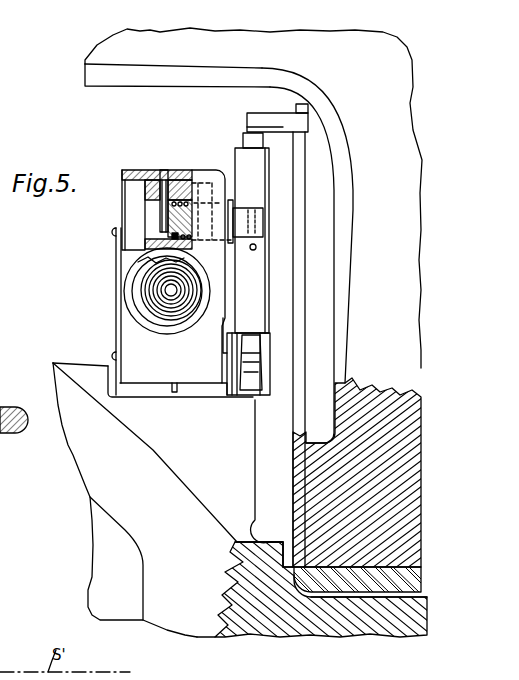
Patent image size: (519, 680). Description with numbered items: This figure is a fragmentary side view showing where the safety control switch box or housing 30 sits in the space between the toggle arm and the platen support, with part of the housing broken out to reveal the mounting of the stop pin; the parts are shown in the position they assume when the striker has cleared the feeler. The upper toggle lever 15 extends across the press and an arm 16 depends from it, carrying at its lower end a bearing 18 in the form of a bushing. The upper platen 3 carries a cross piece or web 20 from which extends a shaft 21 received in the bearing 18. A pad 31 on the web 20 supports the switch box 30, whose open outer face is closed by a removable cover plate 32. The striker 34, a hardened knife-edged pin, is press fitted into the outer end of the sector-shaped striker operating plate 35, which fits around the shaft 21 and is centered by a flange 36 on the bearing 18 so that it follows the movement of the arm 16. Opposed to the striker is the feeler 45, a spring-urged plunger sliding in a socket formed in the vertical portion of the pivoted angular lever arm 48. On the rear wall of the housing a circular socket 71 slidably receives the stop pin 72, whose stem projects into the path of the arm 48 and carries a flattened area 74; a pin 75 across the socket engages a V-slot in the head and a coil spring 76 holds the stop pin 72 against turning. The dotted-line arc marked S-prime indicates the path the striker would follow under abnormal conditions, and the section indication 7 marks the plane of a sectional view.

The upper platen 3 is at (197, 625).
The section line 7- 7 is at (255, 147).
The upper toggle lever 15 is at (186, 68).
The arm 16 is at (403, 102).
The bearing 18 is at (393, 586).
The cross piece or web 20 is at (74, 366).
The shaft 21 is at (365, 623).
The safety control switch box or housing 30 is at (142, 169).
The pad 31 is at (252, 448).
The cover plate 32 is at (122, 197).
The striker 34 is at (247, 121).
The striker operating plate 35 is at (293, 478).
The flange 36 is at (283, 560).
The feeler 45 is at (243, 139).
The pivoted angular lever arm 48 is at (258, 280).
The circular socket 71 is at (157, 226).
The stop pin 72 is at (182, 249).
The flattened area 74 is at (263, 222).
The pin 75 is at (163, 172).
The coil spring 76 is at (181, 255).